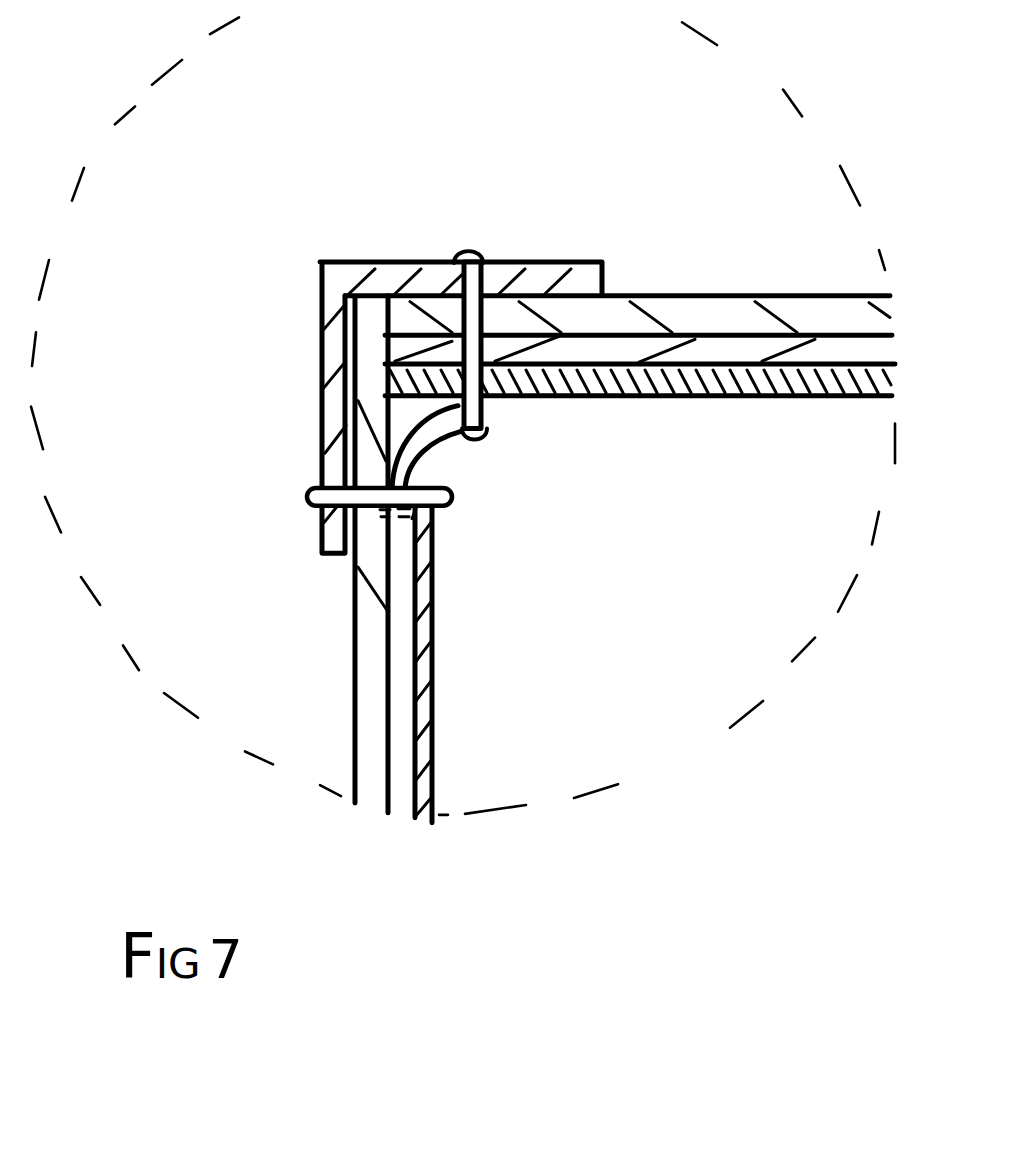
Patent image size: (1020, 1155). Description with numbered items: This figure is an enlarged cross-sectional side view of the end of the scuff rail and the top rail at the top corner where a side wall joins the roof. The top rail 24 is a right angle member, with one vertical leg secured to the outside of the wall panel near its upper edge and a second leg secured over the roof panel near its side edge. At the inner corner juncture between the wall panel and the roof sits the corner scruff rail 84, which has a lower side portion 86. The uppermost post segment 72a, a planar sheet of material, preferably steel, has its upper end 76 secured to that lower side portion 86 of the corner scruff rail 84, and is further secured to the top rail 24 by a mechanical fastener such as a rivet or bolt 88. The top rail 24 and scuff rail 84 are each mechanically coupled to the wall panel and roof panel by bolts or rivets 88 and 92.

The top rail 24 is at (312, 316).
The lower side portion 86 is at (370, 514).
The upper post segment 72a is at (442, 766).
The corner scruff rail 84 is at (483, 455).
The bolt or rivet 92 is at (548, 186).
The rivet or bolt 88 is at (300, 484).
The upper end 76 is at (430, 504).